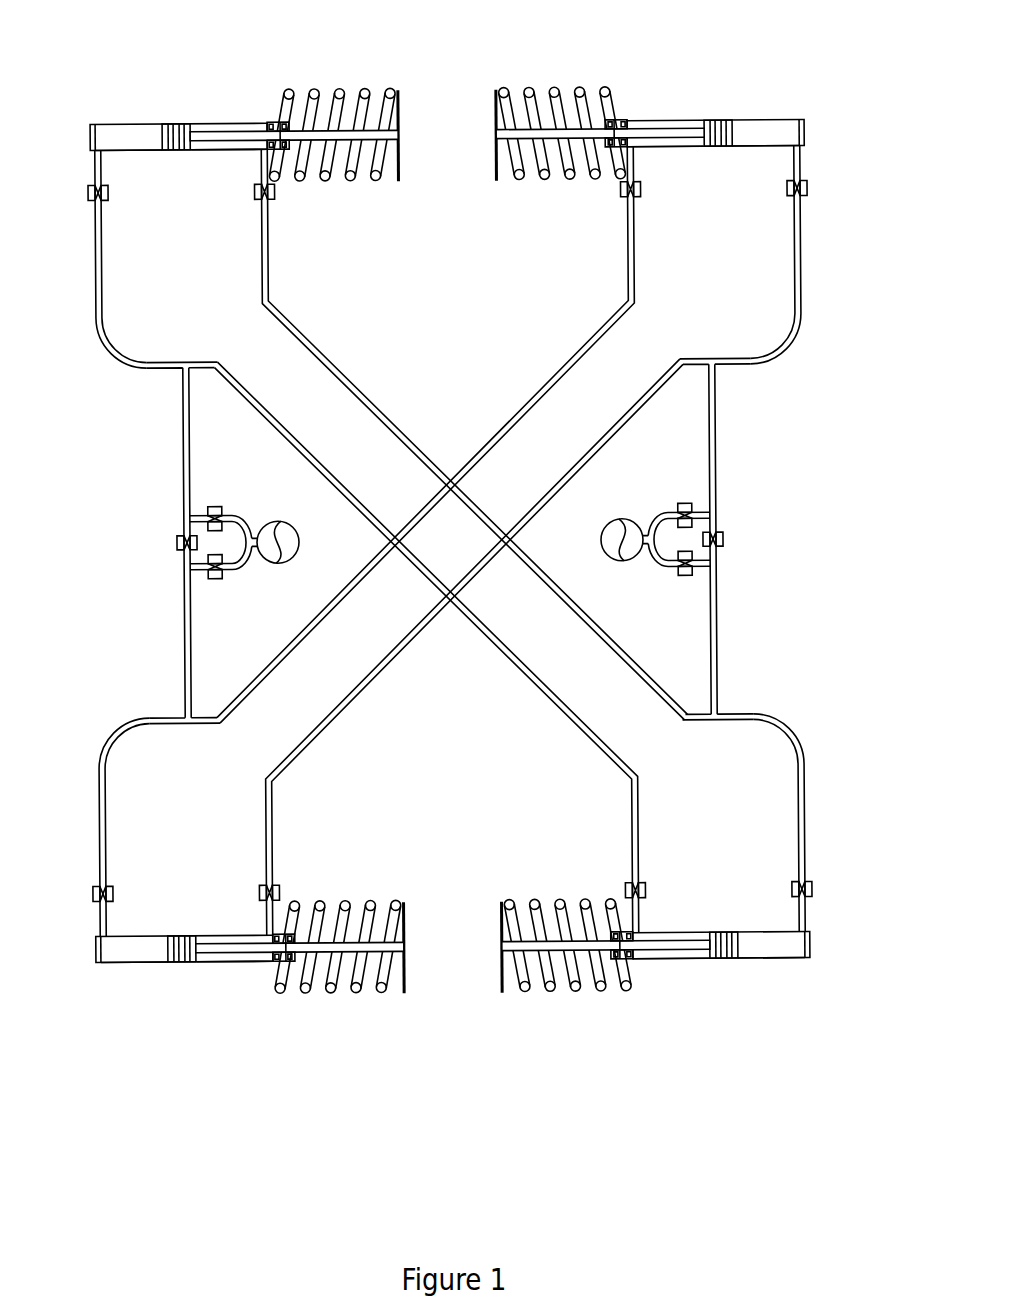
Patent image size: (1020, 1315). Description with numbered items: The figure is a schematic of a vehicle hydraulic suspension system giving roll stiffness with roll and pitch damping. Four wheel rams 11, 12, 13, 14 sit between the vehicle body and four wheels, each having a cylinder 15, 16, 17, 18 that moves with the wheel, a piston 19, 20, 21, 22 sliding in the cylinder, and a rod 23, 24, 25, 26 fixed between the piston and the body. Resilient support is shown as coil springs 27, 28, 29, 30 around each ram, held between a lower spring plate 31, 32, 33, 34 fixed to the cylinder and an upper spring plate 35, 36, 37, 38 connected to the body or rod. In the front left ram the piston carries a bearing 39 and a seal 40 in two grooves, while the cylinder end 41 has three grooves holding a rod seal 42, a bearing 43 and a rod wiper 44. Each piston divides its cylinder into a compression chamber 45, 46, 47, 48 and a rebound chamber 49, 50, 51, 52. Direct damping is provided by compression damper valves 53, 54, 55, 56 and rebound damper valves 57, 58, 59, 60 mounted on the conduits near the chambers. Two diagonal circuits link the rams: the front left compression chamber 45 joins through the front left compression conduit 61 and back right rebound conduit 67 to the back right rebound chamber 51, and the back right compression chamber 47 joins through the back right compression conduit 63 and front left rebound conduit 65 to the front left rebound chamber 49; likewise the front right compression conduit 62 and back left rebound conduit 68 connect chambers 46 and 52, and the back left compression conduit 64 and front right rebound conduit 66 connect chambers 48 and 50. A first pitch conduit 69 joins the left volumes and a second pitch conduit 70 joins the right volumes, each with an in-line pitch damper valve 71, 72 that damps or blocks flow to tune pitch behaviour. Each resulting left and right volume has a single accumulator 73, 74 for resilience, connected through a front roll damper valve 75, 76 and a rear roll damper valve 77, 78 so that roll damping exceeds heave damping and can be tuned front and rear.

The wheel ram 11 is at (165, 50).
The wheel ram 12 is at (718, 62).
The wheel ram 13 is at (718, 1025).
The wheel ram 14 is at (175, 1025).
The cylinder 15 is at (122, 121).
The cylinder 16 is at (772, 121).
The cylinder 17 is at (775, 962).
The cylinder 18 is at (125, 962).
The piston 19 is at (162, 122).
The piston 20 is at (727, 122).
The piston 21 is at (735, 962).
The piston 22 is at (172, 962).
The rod 23 is at (230, 131).
The rod 24 is at (652, 131).
The rod 25 is at (657, 955).
The rod 26 is at (247, 952).
The coil spring 27 is at (323, 100).
The coil spring 28 is at (556, 100).
The coil spring 29 is at (565, 990).
The coil spring 30 is at (335, 990).
The lower spring plate 31 is at (270, 121).
The lower spring plate 32 is at (627, 120).
The lower spring plate 33 is at (628, 990).
The lower spring plate 34 is at (280, 990).
The upper spring plate 35 is at (401, 90).
The upper spring plate 36 is at (498, 90).
The upper spring plate 37 is at (497, 990).
The upper spring plate 38 is at (405, 990).
The bearing 39 is at (175, 122).
The seal 40 is at (181, 122).
The cylinder end 41 is at (284, 148).
The rod seal 42 is at (270, 126).
The bearing 43 is at (283, 121).
The rod wiper 44 is at (290, 121).
The compression chamber 45 is at (128, 148).
The compression chamber 46 is at (765, 148).
The compression chamber 47 is at (765, 940).
The compression chamber 48 is at (132, 943).
The rebound chamber 49 is at (232, 148).
The rebound chamber 50 is at (660, 148).
The rebound chamber 51 is at (665, 940).
The rebound chamber 52 is at (232, 938).
The compression damper valve 53 is at (92, 200).
The compression damper valve 54 is at (806, 200).
The compression damper valve 55 is at (808, 884).
The compression damper valve 56 is at (94, 884).
The rebound damper valve 57 is at (275, 198).
The rebound damper valve 58 is at (624, 200).
The rebound damper valve 59 is at (625, 884).
The rebound damper valve 60 is at (275, 884).
The front left compression conduit 61 is at (102, 240).
The front right compression conduit 62 is at (796, 240).
The back right compression conduit 63 is at (796, 812).
The back left compression conduit 64 is at (107, 812).
The front left rebound conduit 65 is at (263, 240).
The front right rebound conduit 66 is at (637, 240).
The back right rebound conduit 67 is at (637, 812).
The back left rebound conduit 68 is at (265, 812).
The first pitch conduit 69 is at (183, 420).
The second pitch conduit 70 is at (717, 418).
The pitch damper valve 71 is at (176, 539).
The pitch damper valve 72 is at (724, 539).
The accumulator 73 is at (300, 538).
The accumulator 74 is at (600, 538).
The front roll damper valve 75 is at (216, 506).
The front roll damper valve 76 is at (677, 506).
The rear roll damper valve 77 is at (682, 580).
The rear roll damper valve 78 is at (218, 580).